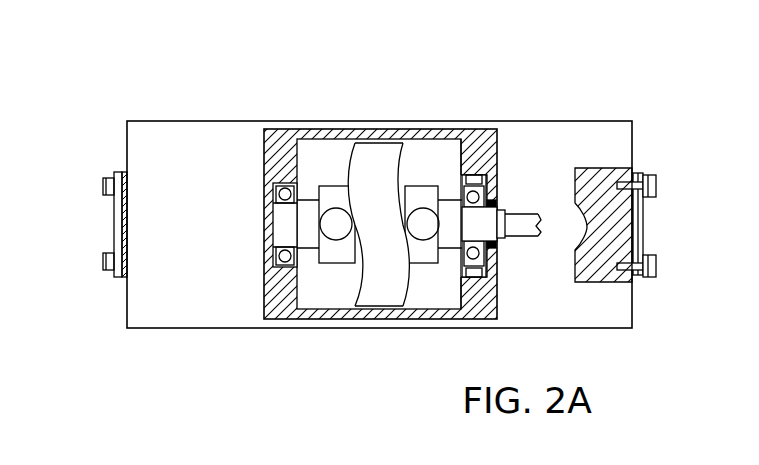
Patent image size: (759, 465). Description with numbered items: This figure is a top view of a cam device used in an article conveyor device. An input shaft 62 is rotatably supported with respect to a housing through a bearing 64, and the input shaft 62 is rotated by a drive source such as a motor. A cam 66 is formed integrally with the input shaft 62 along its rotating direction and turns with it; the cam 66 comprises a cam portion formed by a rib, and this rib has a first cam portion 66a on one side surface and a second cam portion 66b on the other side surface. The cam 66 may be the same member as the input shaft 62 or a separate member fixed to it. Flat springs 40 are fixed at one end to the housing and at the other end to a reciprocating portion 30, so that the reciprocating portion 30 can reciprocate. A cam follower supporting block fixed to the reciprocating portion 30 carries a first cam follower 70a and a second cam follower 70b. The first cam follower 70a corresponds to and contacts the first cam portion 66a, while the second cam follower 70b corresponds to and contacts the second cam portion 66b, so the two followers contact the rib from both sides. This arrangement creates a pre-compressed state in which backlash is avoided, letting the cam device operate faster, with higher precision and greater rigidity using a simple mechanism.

The reciprocating portion 30 is at (636, 290).
The flat springs 40 is at (112, 222).
The input shaft 62 is at (521, 231).
The bearing 64 is at (287, 190).
The cam 66 is at (382, 162).
The first cam portion 66a is at (351, 185).
The second cam portion 66b is at (415, 183).
The first cam follower 70a is at (336, 228).
The second cam follower 70b is at (423, 228).